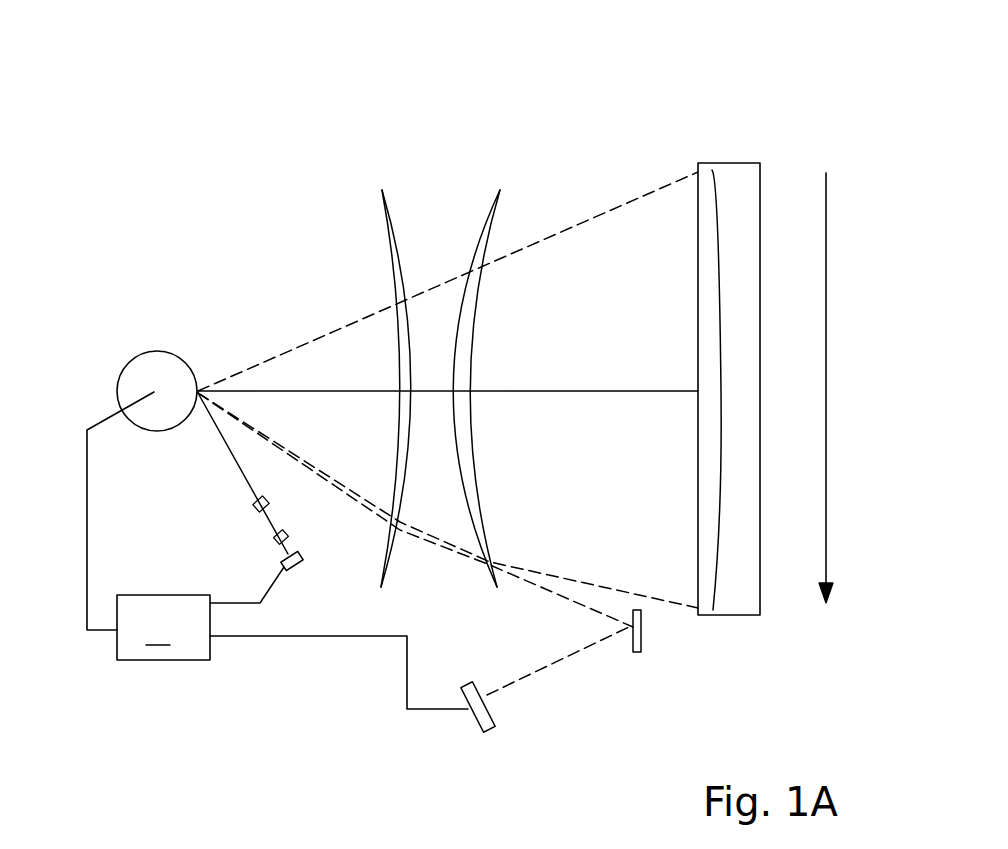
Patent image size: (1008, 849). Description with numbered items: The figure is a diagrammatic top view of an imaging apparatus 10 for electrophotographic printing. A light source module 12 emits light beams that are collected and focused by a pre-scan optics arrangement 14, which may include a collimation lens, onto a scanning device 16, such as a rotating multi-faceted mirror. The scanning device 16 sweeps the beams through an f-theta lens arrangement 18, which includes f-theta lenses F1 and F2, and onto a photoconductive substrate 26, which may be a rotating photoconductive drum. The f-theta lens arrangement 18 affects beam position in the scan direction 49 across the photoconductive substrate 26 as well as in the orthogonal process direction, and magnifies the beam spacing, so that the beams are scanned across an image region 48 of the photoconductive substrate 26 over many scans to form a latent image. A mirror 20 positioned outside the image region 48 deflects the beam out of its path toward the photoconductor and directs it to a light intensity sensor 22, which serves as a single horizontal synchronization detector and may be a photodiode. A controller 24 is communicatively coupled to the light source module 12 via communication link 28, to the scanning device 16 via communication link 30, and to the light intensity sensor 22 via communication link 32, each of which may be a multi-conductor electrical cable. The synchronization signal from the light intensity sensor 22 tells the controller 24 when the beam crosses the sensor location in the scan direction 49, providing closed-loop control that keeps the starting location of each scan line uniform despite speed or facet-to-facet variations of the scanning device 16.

The imaging apparatus 10 is at (195, 141).
The light source module 12 is at (290, 569).
The pre-scan optics arrangement 14 is at (268, 555).
The scanning device 16 is at (153, 352).
The f-theta lens arrangement 18 is at (372, 182).
The mirror 20 is at (641, 635).
The light intensity sensor 22 is at (490, 732).
The controller 24 is at (163, 627).
The photoconductive substrate 26 is at (733, 163).
The communication link 28 is at (237, 603).
The communication link 30 is at (87, 535).
The communication link 32 is at (302, 636).
The image region 48 is at (722, 388).
The scan direction 49 is at (826, 373).
The f-theta lens F1 is at (390, 575).
The f-theta lens F2 is at (480, 498).